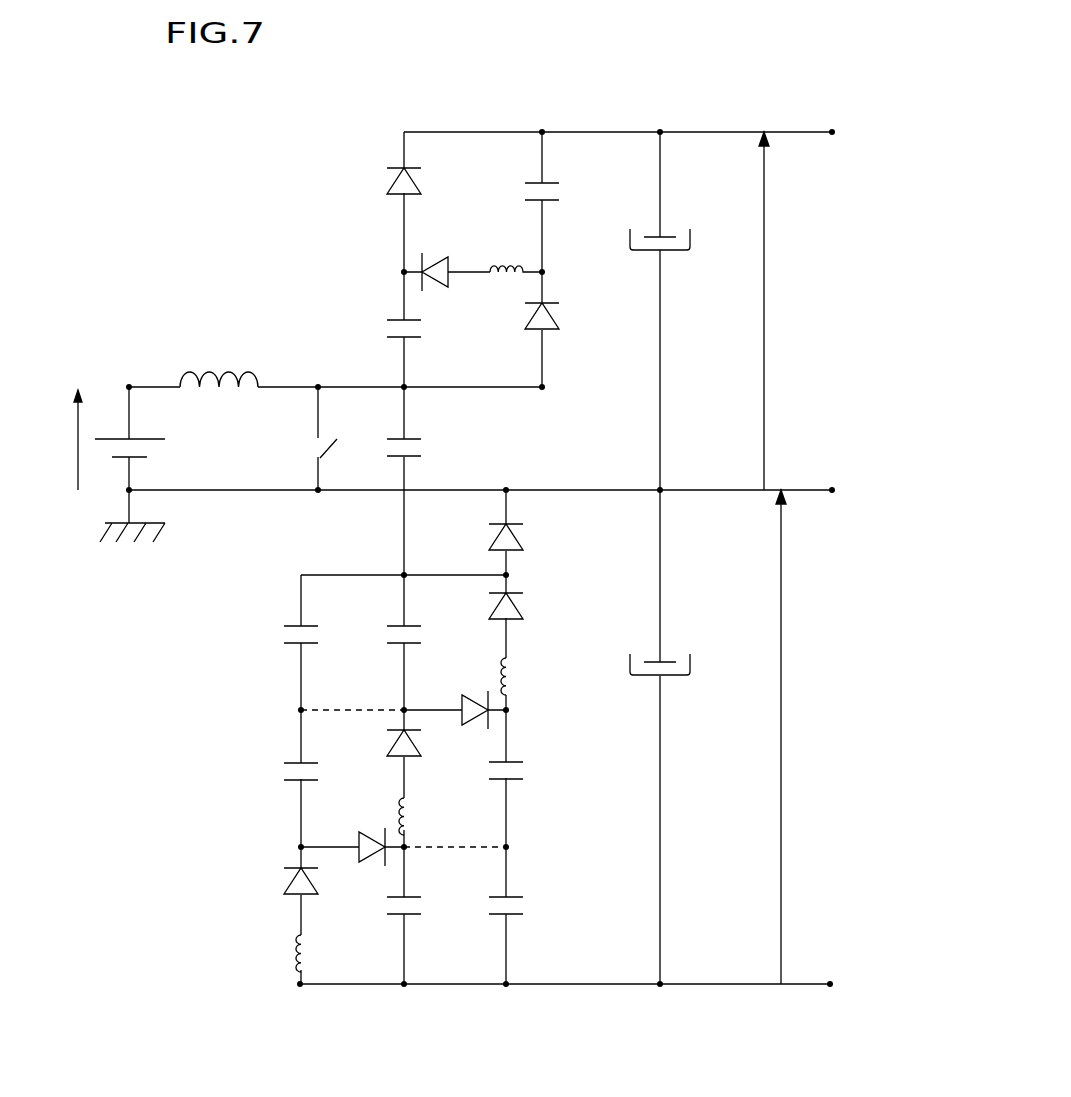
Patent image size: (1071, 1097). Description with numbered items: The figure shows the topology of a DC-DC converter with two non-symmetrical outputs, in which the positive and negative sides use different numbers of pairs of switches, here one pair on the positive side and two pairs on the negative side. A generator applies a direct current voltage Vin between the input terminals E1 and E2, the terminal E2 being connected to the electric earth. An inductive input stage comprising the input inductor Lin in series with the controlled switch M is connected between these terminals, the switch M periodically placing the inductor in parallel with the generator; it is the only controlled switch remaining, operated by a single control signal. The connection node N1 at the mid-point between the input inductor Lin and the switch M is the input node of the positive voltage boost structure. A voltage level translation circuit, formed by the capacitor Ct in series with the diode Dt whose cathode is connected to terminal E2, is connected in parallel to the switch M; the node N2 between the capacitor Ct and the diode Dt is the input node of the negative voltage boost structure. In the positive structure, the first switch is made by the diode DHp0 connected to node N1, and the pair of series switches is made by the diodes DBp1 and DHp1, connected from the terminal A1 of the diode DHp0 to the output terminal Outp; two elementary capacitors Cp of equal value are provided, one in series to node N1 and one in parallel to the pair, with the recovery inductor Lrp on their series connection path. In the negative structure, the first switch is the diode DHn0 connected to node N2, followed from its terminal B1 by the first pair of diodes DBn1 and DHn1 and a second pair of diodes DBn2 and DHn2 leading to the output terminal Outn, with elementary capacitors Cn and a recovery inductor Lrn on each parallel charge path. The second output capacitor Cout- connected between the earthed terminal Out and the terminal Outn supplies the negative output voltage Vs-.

The direct current voltage Vin is at (100, 438).
The input terminal E1 is at (125, 371).
The input terminal E2 is at (129, 509).
The input inductor Lin is at (219, 364).
The connection node N1 is at (322, 370).
The controlled switch M is at (314, 438).
The capacitor Ct is at (419, 443).
The diode DHp1 is at (369, 185).
The elementary capacitor Cp is at (476, 257).
The diode DBp1 is at (452, 257).
The recovery inductor Lrp is at (514, 285).
The terminal of the first switch A1 is at (542, 272).
The diode DHp0 is at (577, 323).
The output terminal Outp is at (841, 117).
The output terminal Out is at (850, 473).
The diode Dt is at (525, 531).
The input node N2 is at (506, 575).
The diode DHn0 is at (544, 611).
The elementary capacitor Cn is at (422, 760).
The recovery inductor Lrn is at (402, 809).
The diode DHn1 is at (453, 697).
The terminal of the first switch B1 is at (506, 709).
The diode DBn1 is at (368, 736).
The diode DBn2 is at (346, 834).
The diode DHn2 is at (265, 883).
The second output capacitor Cout- is at (684, 653).
The negative output voltage Vs- is at (804, 737).
The output terminal Outn is at (838, 970).